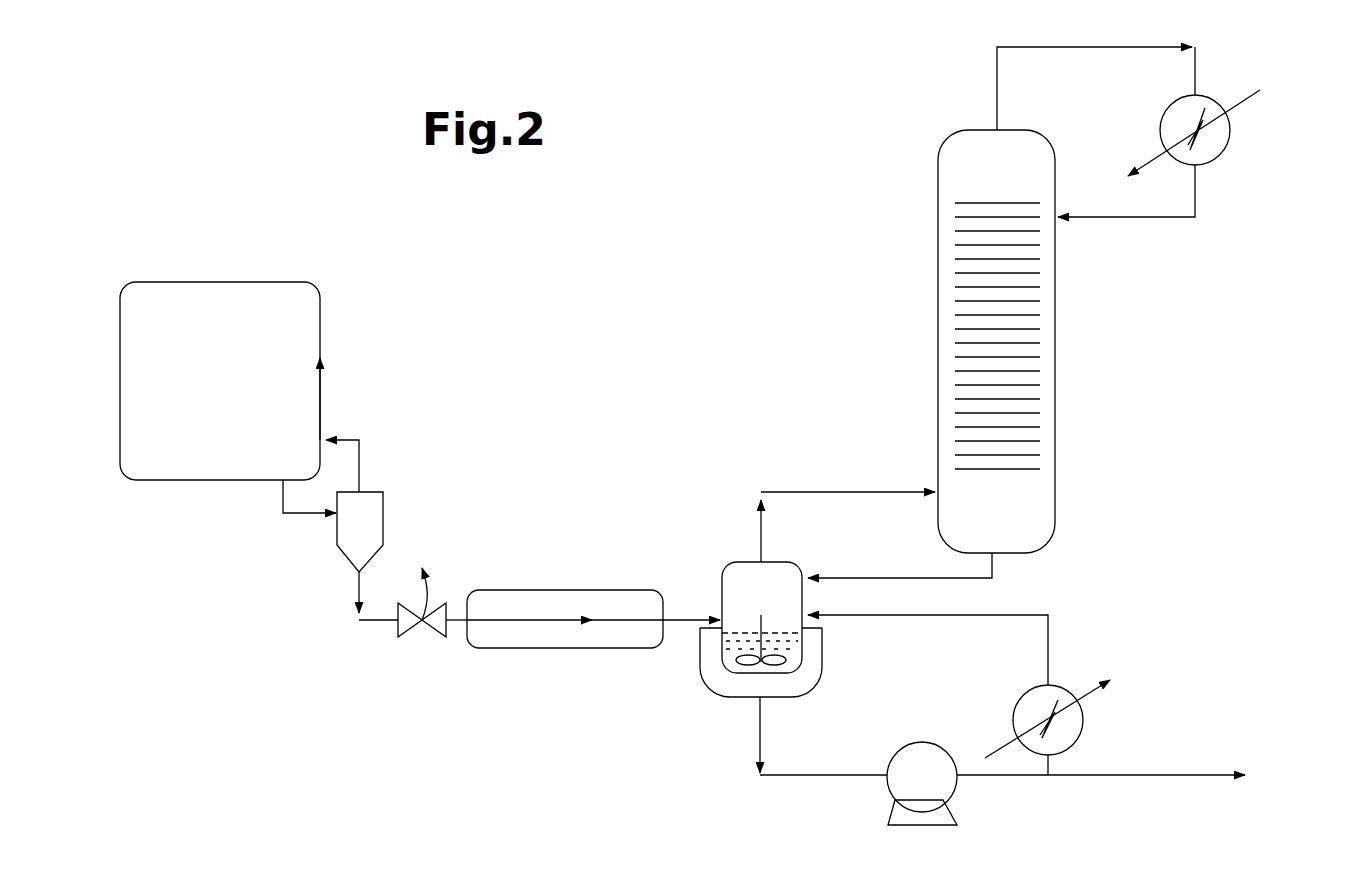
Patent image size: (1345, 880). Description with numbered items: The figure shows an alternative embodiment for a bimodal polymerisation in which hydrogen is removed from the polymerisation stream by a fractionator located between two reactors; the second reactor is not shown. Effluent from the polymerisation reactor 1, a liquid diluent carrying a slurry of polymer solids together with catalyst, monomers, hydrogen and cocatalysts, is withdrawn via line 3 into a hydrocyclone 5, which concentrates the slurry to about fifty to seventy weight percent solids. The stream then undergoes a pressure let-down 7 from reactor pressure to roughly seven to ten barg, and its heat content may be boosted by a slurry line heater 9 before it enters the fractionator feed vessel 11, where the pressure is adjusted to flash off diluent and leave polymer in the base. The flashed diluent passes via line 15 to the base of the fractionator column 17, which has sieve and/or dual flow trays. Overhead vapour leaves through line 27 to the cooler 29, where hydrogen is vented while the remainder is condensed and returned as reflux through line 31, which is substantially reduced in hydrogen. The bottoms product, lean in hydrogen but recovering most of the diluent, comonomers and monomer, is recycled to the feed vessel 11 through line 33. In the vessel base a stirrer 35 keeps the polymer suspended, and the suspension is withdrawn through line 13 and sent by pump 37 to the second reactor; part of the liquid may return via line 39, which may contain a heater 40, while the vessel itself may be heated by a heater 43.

The polymerisation reactor 1 is at (231, 392).
The line 3 is at (282, 498).
The hydrocyclone 5 is at (367, 533).
The pressure let-down 7 is at (422, 640).
The slurry line heater 9 is at (550, 590).
The fractionator feed vessel 11 is at (722, 585).
The line 13 is at (755, 723).
The line 15 is at (850, 490).
The fractionator column 17 is at (935, 245).
The line 27 is at (1055, 47).
The cooler 29 is at (1225, 152).
The line 31 is at (1118, 217).
The line 33 is at (960, 578).
The stirrer 35 is at (765, 622).
The pump 37 is at (913, 778).
The line 39 is at (1048, 642).
The heater 40 is at (1083, 727).
The heater 43 is at (700, 668).